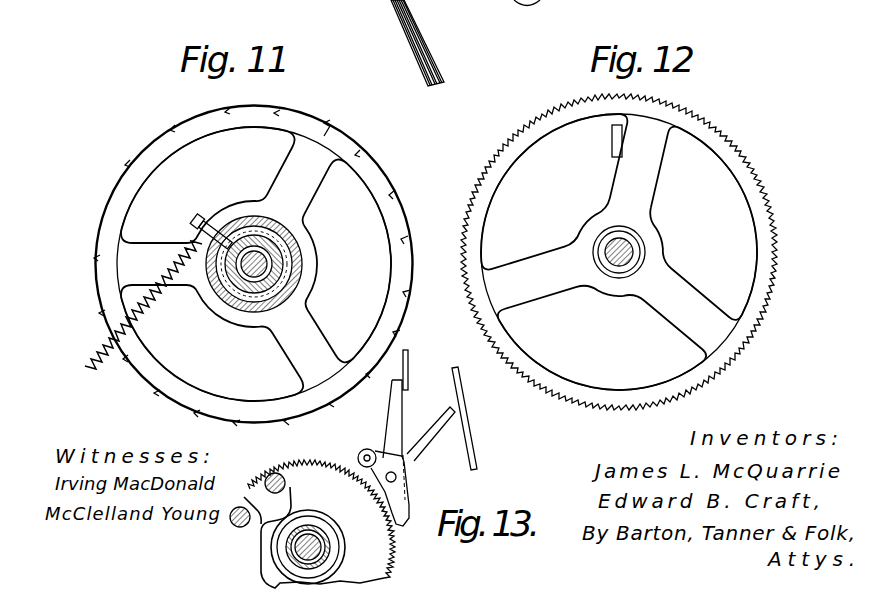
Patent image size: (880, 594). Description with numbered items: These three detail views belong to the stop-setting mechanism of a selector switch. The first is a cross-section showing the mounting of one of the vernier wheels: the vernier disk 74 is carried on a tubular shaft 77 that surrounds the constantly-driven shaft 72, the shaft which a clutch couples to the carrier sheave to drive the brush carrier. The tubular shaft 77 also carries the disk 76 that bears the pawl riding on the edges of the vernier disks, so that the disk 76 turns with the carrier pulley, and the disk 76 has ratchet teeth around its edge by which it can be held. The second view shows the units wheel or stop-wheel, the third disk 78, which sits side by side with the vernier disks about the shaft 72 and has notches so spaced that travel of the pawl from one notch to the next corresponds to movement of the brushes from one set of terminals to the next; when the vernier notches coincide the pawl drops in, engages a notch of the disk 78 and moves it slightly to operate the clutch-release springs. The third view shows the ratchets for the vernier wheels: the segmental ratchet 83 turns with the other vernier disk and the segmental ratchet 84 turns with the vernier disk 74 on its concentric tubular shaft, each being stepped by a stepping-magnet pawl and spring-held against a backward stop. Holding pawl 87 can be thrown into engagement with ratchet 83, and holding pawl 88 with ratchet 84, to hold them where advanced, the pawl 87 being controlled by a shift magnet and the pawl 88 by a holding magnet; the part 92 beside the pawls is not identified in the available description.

In FIG. 11, the constantly-driven shaft 72 is at (256, 262).
In FIG. 12, the constantly-driven shaft 72 is at (621, 251).
In FIG. 13, the constantly-driven shaft 72 is at (312, 548).
In FIG. 11, the vernier disk 74 is at (326, 138).
In FIG. 11, the tubular shaft 77 is at (268, 271).
In FIG. 12, the disk 76 is at (735, 146).
In FIG. 12, the units disk 78 is at (504, 339).
In FIG. 13, the segmental ratchet 83 is at (319, 524).
In FIG. 13, the segmental ratchet 84 is at (248, 490).
In FIG. 13, the holding pawl 88 is at (389, 409).
In FIG. 13, the holding pawl 87 is at (419, 441).
In FIG. 13, the stop bar 92 is at (463, 400).